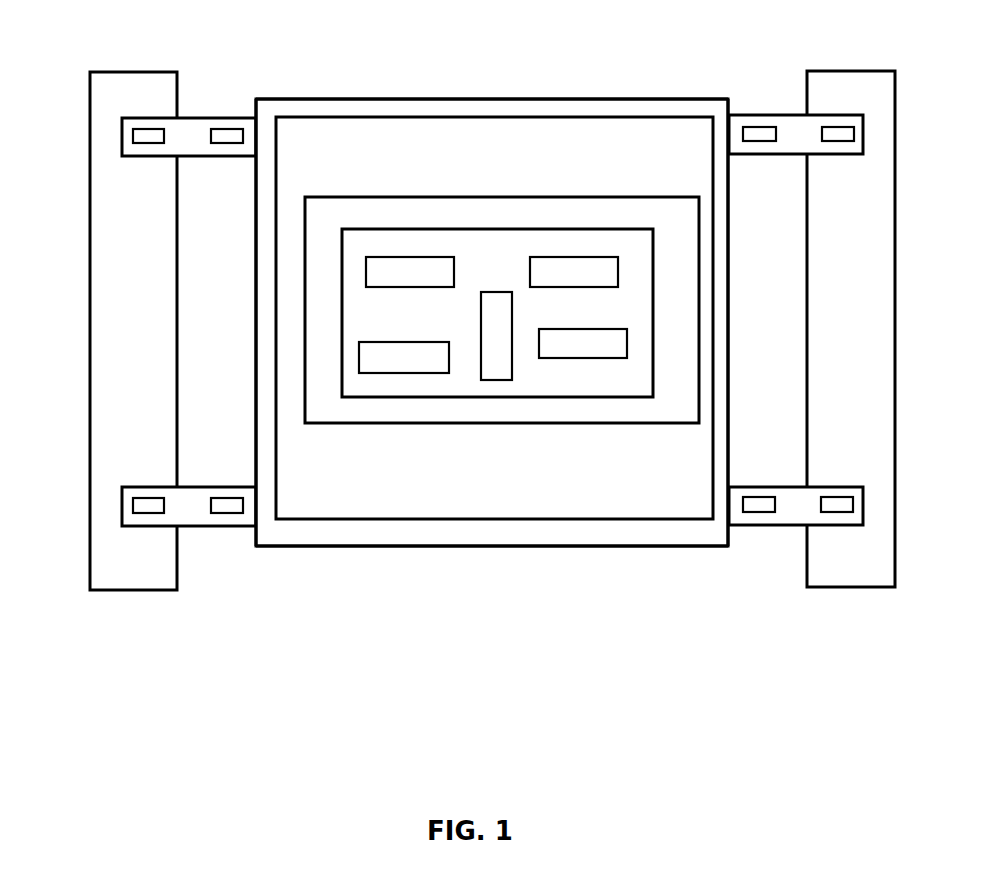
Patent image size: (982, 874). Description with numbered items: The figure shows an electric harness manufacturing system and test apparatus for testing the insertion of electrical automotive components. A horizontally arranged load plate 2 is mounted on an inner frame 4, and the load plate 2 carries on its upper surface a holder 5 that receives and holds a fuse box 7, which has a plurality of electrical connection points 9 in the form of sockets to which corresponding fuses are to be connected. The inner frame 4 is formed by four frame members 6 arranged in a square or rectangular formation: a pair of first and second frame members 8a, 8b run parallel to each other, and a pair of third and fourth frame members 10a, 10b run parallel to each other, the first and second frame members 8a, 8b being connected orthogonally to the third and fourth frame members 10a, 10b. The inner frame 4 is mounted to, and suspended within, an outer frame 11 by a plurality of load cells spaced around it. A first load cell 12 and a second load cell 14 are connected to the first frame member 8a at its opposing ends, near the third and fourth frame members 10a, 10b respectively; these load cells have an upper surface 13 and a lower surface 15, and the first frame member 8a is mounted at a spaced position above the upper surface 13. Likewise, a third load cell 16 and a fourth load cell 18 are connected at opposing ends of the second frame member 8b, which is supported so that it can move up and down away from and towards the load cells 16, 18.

The load plate 2 is at (482, 133).
The inner frame 4 is at (381, 107).
The holder 5 is at (365, 413).
The frame members 6 is at (302, 110).
The fuse box 7 is at (628, 390).
The first frame member 8a is at (262, 317).
The second frame member 8b is at (723, 303).
The electrical connection points 9 is at (560, 263).
The third frame member 10a is at (687, 107).
The fourth frame member 10b is at (407, 537).
The outer frame 11 is at (97, 318).
The first load cell 12 is at (204, 527).
The upper surface 13 is at (191, 493).
The second load cell 14 is at (197, 118).
The lower surface 15 is at (191, 157).
The third load cell 16 is at (765, 520).
The fourth load cell 18 is at (755, 115).